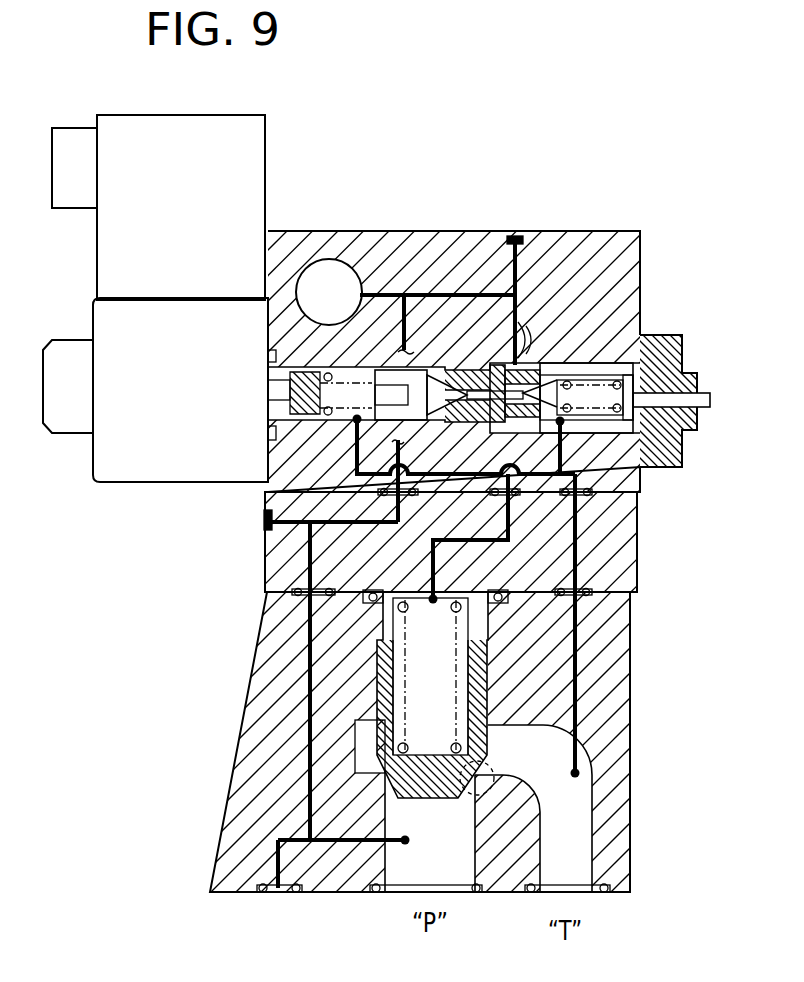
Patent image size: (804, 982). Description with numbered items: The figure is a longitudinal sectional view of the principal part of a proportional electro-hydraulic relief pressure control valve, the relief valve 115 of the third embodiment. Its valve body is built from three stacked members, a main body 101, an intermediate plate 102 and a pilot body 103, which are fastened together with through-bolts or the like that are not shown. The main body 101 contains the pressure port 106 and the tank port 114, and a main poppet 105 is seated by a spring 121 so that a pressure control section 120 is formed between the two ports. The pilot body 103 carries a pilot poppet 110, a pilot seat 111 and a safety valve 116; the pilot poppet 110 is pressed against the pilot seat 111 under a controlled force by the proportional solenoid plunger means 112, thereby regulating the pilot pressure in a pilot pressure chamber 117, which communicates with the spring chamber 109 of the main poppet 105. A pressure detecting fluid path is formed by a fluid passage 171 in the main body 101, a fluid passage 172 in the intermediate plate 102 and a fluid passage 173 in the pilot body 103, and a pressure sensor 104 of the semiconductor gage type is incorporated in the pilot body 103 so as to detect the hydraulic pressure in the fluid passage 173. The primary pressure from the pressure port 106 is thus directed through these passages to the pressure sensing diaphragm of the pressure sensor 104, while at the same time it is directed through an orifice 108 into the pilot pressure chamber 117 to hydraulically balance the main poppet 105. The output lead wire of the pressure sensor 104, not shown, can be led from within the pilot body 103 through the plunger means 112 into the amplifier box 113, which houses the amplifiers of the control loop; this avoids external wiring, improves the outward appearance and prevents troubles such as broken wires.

The main body 101 is at (610, 660).
The intermediate plate 102 is at (623, 538).
The pilot body 103 is at (648, 290).
The pressure sensor 104 is at (330, 262).
The main poppet 105 is at (482, 668).
The pressure port 106 is at (418, 870).
The orifice 108 is at (525, 340).
The spring chamber 109 is at (448, 603).
The pilot poppet 110 is at (410, 372).
The pilot seat 111 is at (468, 375).
The proportional solenoid plunger means 112 is at (157, 452).
The amplifier box 113 is at (236, 130).
The tank port 114 is at (578, 876).
The relief valve 115 is at (637, 213).
The safety valve 116 is at (625, 465).
The pilot pressure chamber 117 is at (640, 340).
The pressure control section 120 is at (478, 796).
The spring 121 is at (395, 612).
The fluid passage 171 is at (308, 792).
The fluid passage 172 is at (266, 516).
The fluid passage 173 is at (400, 292).